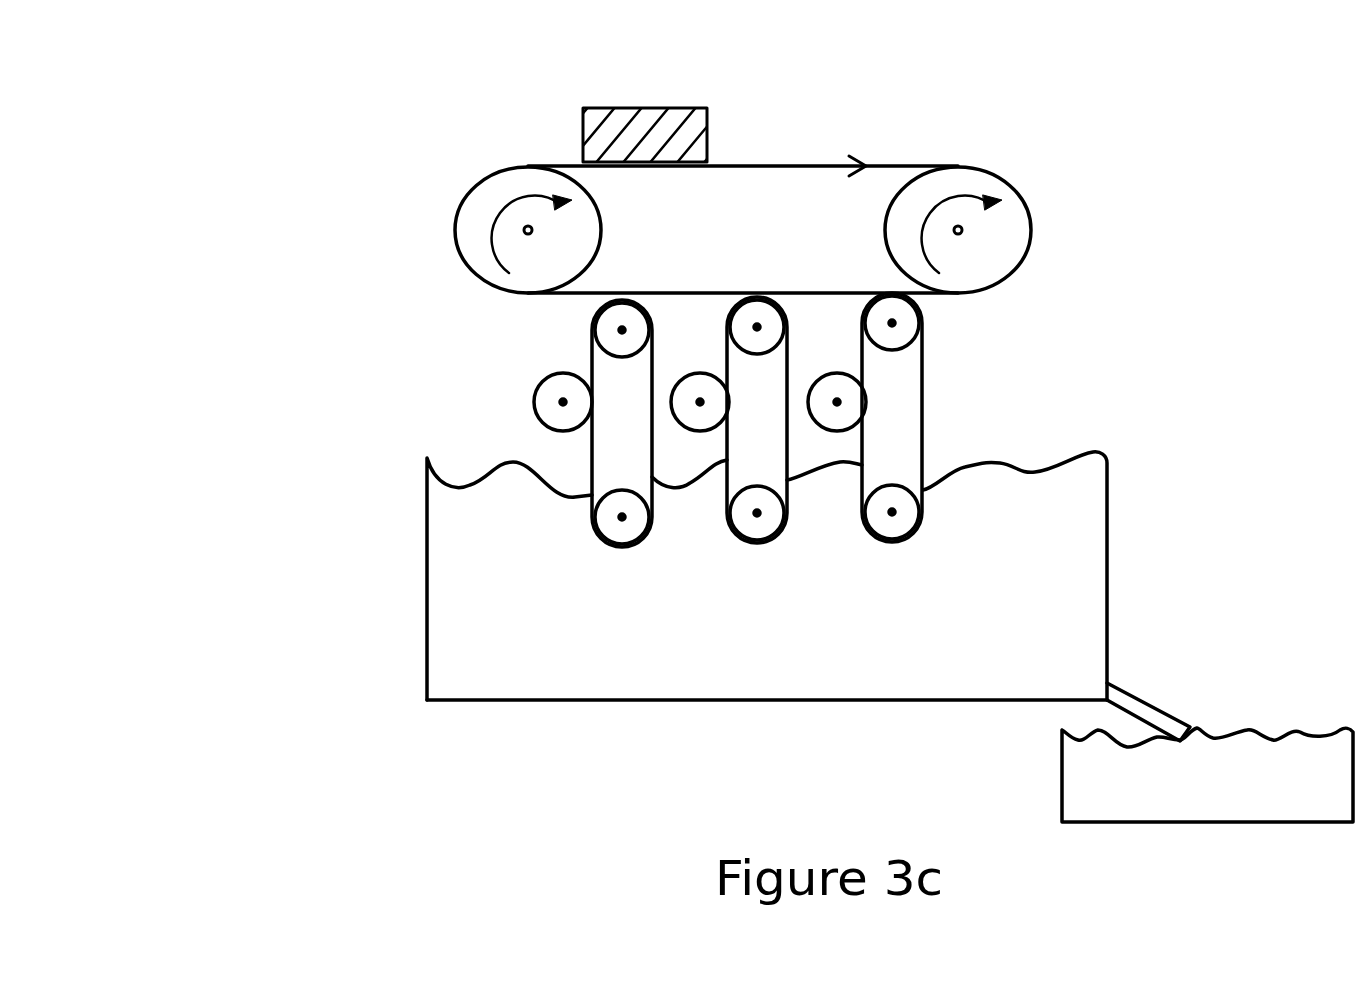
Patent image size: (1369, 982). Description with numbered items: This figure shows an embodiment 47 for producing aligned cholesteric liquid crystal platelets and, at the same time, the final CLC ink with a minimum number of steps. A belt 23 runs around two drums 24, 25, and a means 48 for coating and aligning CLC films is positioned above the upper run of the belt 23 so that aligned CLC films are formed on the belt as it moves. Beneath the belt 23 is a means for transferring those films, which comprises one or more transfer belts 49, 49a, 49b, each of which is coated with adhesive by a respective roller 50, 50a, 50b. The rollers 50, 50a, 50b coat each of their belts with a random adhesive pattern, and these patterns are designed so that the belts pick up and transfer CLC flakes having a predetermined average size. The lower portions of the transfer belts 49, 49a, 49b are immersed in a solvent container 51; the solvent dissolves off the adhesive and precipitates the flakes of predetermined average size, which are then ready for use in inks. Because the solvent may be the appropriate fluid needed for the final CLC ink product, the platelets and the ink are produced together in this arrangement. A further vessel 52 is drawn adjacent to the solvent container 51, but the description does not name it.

The belt 23 is at (562, 293).
The drum 24 is at (457, 203).
The drum 25 is at (1018, 206).
The embodiment for producing aligned CLC platelets and CLC ink 47 is at (293, 598).
The means for coating and aligning CLC films 48 is at (617, 103).
The transfer belt 49 is at (930, 368).
The transfer belt 49a is at (733, 462).
The transfer belt 49b is at (587, 442).
The roller 50 is at (873, 413).
The roller 50a is at (700, 431).
The roller 50b is at (553, 403).
The solvent container 51 is at (893, 667).
The overflow collection tank 52 is at (1283, 760).